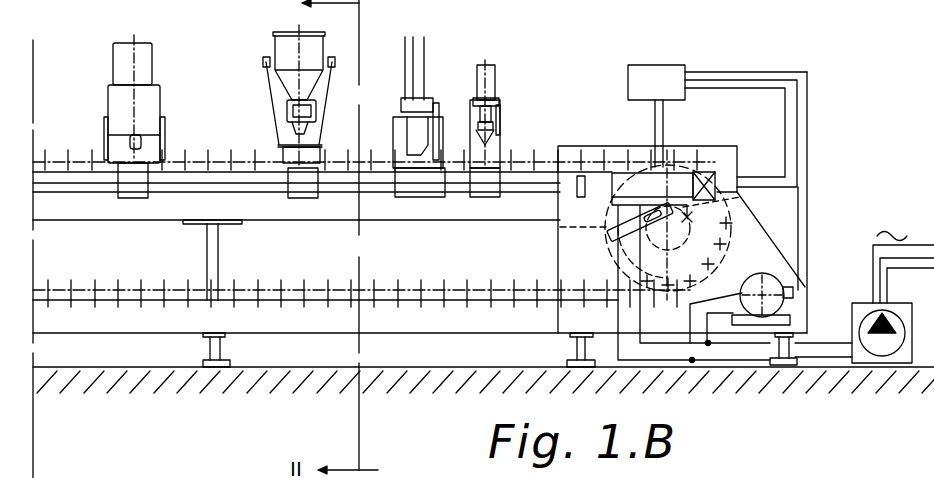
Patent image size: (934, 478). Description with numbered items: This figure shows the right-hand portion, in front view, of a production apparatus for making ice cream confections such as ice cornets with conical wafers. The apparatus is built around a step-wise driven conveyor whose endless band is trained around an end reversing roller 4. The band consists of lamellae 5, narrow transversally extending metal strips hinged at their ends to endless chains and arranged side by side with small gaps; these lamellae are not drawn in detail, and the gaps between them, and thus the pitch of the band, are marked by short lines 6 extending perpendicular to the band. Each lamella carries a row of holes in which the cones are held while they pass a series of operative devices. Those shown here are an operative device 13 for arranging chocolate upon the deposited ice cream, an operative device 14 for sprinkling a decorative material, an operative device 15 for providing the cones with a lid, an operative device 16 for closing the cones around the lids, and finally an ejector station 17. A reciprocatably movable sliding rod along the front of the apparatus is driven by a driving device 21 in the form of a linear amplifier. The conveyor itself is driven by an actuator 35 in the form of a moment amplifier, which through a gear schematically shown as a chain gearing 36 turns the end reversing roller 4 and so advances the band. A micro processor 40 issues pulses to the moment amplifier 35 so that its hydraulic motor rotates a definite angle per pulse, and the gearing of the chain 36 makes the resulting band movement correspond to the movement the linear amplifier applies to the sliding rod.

The end reversing roller 4 is at (617, 258).
The lamellae 5 is at (133, 268).
The short lines 6 is at (297, 268).
The operative device for arranging chocolate 13 is at (122, 42).
The operative device for sprinkling decorative material 14 is at (268, 46).
The operative device for providing lids 15 is at (425, 53).
The operative device for closing cones 16 is at (498, 82).
The ejector station 17 is at (625, 143).
The driving device 21 is at (675, 187).
The actuator 35 is at (775, 318).
The chain gearing 36 is at (743, 263).
The micro processor 40 is at (652, 65).